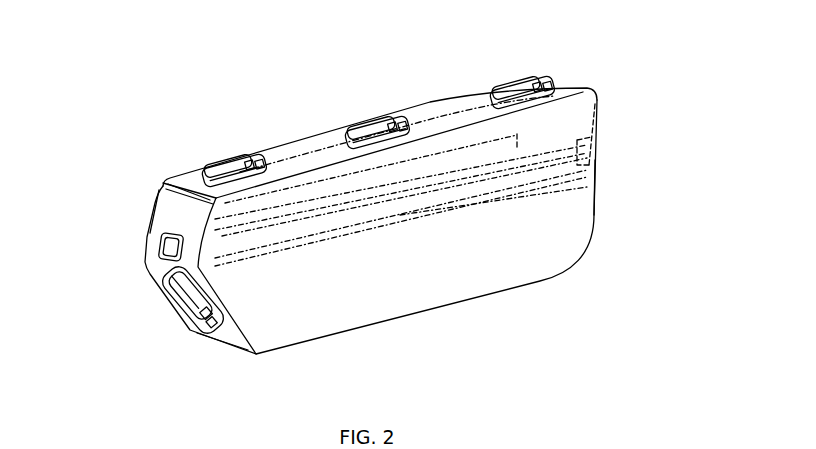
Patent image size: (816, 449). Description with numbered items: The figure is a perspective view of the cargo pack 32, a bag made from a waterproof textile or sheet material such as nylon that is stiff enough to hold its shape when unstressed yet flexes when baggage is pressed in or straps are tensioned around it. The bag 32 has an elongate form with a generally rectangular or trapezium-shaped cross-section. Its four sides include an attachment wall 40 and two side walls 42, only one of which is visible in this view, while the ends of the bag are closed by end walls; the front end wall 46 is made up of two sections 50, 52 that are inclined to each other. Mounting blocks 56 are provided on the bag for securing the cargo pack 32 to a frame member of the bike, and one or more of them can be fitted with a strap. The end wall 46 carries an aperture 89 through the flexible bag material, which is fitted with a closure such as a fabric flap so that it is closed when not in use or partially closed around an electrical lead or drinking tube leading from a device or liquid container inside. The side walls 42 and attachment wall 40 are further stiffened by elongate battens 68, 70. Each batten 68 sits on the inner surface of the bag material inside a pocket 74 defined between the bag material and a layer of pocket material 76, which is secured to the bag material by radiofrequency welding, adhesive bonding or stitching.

The cargo pack 32 is at (318, 360).
The attachment wall 40 is at (277, 152).
The side wall 42 is at (577, 217).
The front end wall 46 is at (163, 279).
The section of front end wall 50 is at (163, 207).
The section of front end wall 52 is at (188, 325).
The mounting block 56 is at (218, 162).
The batten 68 is at (373, 180).
The batten 70 is at (452, 95).
The pocket 74 is at (599, 159).
The pocket material 76 is at (599, 110).
The aperture 89 is at (160, 248).